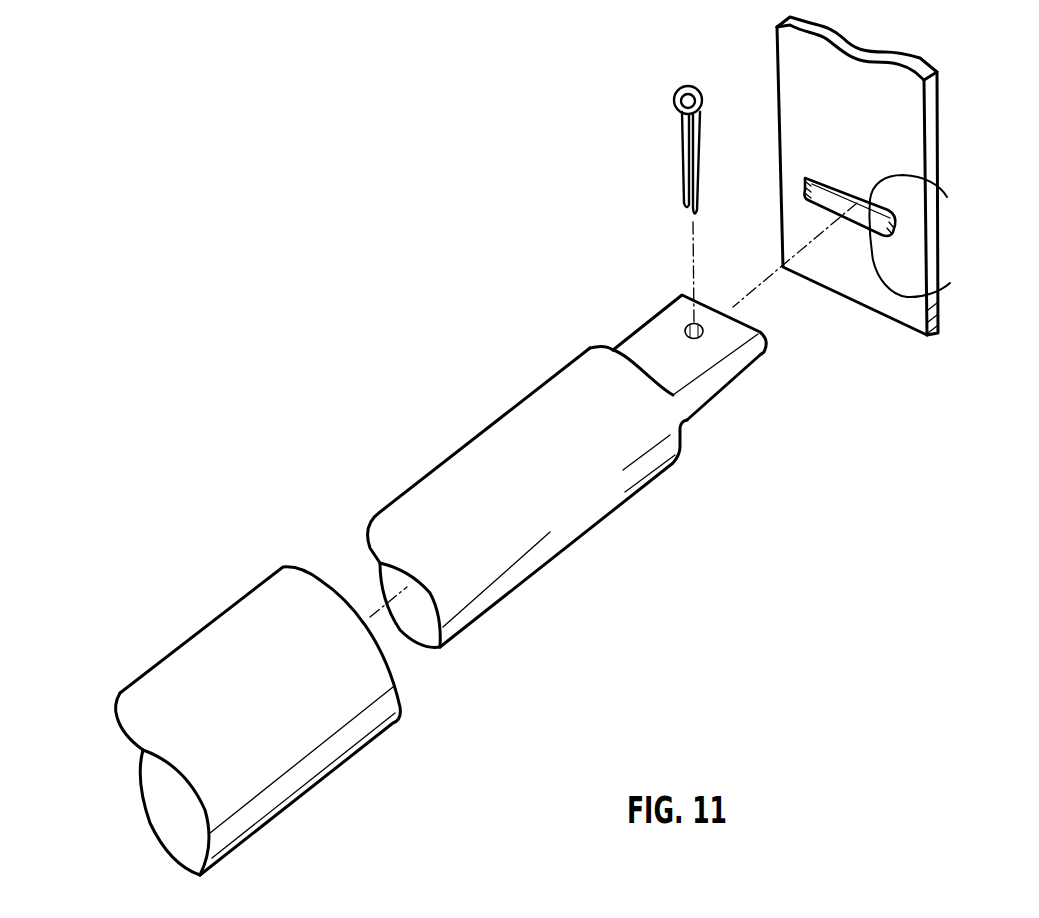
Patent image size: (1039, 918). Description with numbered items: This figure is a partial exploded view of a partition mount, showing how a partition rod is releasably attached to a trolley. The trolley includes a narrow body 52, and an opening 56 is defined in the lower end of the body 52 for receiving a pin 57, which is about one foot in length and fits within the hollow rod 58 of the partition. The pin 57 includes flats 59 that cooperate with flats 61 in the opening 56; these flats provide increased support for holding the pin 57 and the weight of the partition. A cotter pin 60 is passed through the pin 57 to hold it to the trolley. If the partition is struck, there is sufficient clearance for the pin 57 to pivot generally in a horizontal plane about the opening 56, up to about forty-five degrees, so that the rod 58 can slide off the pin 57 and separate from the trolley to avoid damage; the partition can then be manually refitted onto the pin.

The body 52 is at (913, 317).
The opening 56 is at (828, 212).
The pin 57 is at (620, 493).
The hollow rod 58 is at (377, 713).
The flats 59 is at (703, 352).
The cotter pin 60 is at (675, 93).
The flats 61 is at (947, 197).